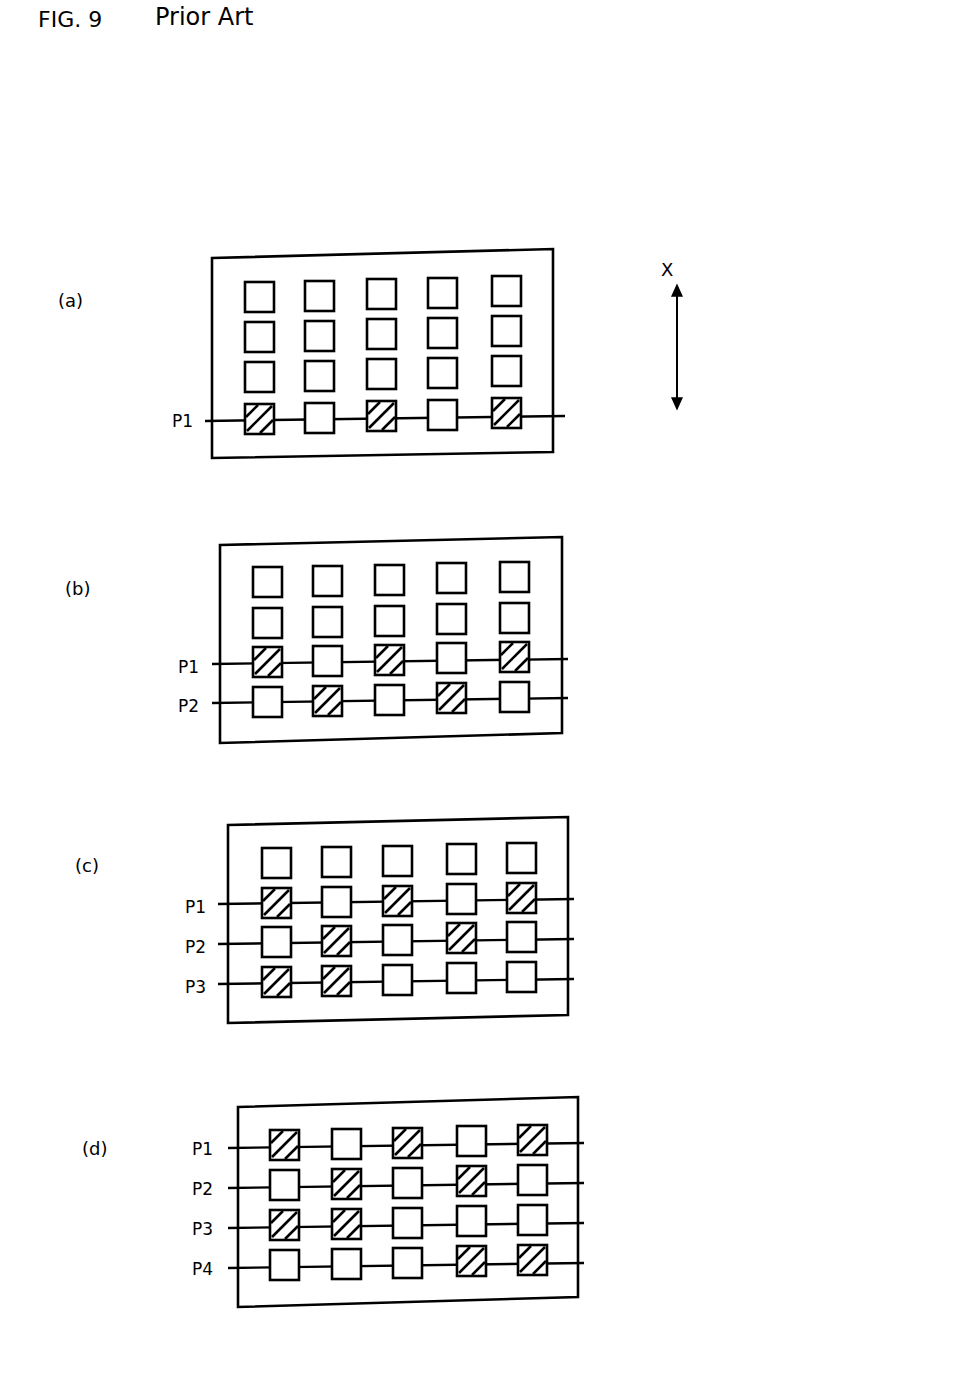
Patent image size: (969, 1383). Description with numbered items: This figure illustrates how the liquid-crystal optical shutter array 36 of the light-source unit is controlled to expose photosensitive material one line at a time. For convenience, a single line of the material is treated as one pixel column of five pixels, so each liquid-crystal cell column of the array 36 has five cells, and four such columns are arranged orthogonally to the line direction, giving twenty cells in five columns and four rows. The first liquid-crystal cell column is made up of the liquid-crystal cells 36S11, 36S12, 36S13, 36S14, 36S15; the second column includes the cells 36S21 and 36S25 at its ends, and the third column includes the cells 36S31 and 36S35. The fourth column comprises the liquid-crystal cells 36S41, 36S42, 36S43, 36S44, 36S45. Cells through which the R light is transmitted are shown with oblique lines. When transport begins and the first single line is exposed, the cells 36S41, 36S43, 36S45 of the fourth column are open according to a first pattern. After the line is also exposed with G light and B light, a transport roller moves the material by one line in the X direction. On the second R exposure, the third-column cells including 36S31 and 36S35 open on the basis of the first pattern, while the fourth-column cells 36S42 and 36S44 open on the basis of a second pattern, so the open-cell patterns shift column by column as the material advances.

The liquid-crystal optical shutter array 36 is at (552, 258).
The liquid-crystal cell 36S11 is at (258, 282).
The liquid-crystal cell 36S12 is at (323, 281).
The liquid-crystal cell 36S13 is at (380, 279).
The liquid-crystal cell 36S14 is at (447, 278).
The liquid-crystal cell 36S15 is at (507, 276).
The liquid-crystal cell 36S21 is at (245, 338).
The liquid-crystal cell 36S25 is at (521, 332).
The liquid-crystal cell 36S31 is at (245, 382).
The liquid-crystal cell 36S35 is at (521, 376).
The liquid-crystal cell 36S41 is at (270, 434).
The liquid-crystal cell 36S42 is at (327, 433).
The liquid-crystal cell 36S43 is at (390, 431).
The liquid-crystal cell 36S44 is at (450, 430).
The liquid-crystal cell 36S45 is at (507, 428).